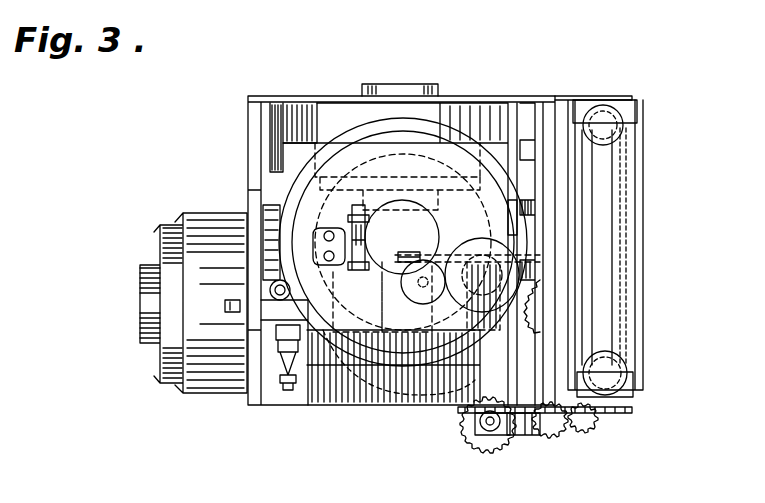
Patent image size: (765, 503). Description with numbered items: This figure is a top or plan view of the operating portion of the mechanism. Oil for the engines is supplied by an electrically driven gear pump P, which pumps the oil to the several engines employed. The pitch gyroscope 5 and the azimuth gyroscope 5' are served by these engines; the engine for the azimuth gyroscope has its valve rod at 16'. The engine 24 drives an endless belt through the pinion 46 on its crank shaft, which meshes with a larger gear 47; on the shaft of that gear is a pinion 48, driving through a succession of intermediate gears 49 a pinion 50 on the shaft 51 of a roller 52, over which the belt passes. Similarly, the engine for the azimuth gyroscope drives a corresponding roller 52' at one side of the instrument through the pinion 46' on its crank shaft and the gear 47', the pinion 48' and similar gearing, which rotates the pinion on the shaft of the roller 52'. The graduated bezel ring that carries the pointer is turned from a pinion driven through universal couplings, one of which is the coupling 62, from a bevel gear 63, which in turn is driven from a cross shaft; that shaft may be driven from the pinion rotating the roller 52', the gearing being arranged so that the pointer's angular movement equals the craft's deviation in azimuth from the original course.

The gear pump P is at (190, 218).
The pitch gyroscope 5 is at (417, 237).
The azimuth gyroscope 5' is at (400, 75).
The valve rod 16' is at (363, 237).
The engine 24 is at (362, 395).
The pinion 46 is at (417, 244).
The pinion 46' is at (418, 292).
The gear 47 is at (482, 188).
The gear 47' is at (568, 306).
The pinion 48 is at (467, 425).
The pinion 48' is at (521, 149).
The intermediate gears 49 is at (540, 423).
The pinion 50 is at (627, 413).
The shaft 51 is at (606, 95).
The roller 52 is at (630, 122).
The roller 52' is at (633, 374).
The universal coupling 62 is at (550, 420).
The bevel gear 63 is at (503, 428).